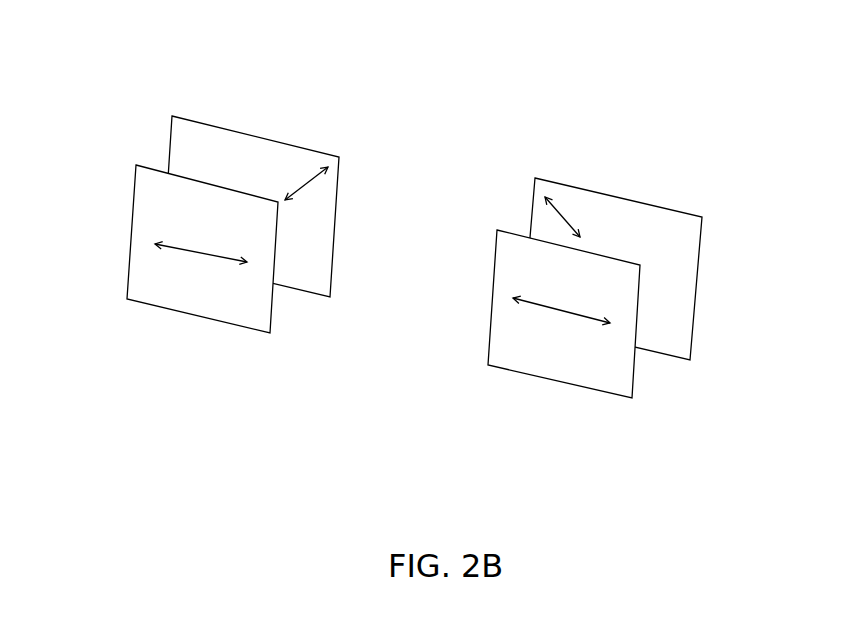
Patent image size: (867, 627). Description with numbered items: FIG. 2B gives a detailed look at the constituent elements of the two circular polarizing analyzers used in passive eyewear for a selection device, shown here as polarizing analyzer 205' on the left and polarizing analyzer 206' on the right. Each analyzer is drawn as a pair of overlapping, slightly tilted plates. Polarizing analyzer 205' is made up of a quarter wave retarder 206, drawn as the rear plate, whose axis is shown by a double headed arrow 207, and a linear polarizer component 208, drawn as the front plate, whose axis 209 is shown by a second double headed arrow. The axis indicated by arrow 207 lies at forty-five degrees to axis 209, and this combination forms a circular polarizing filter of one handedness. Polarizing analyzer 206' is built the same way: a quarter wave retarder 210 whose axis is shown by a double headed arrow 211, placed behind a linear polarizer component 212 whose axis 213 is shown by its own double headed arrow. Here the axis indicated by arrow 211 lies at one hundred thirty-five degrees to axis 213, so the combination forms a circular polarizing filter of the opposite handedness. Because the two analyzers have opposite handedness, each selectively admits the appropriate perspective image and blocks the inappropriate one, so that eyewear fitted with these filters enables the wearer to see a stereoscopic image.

The polarizing analyzer 205' is at (236, 250).
The quarter wave retarder 206 is at (236, 218).
The double headed arrow 207 is at (308, 188).
The linear polarizer component 208 is at (217, 330).
The axis 209 is at (207, 259).
The polarizing analyzer 206' is at (629, 268).
The quarter wave retarder 210 is at (629, 270).
The double headed arrow 211 is at (557, 217).
The linear polarizer component 212 is at (612, 346).
The axis 213 is at (582, 323).